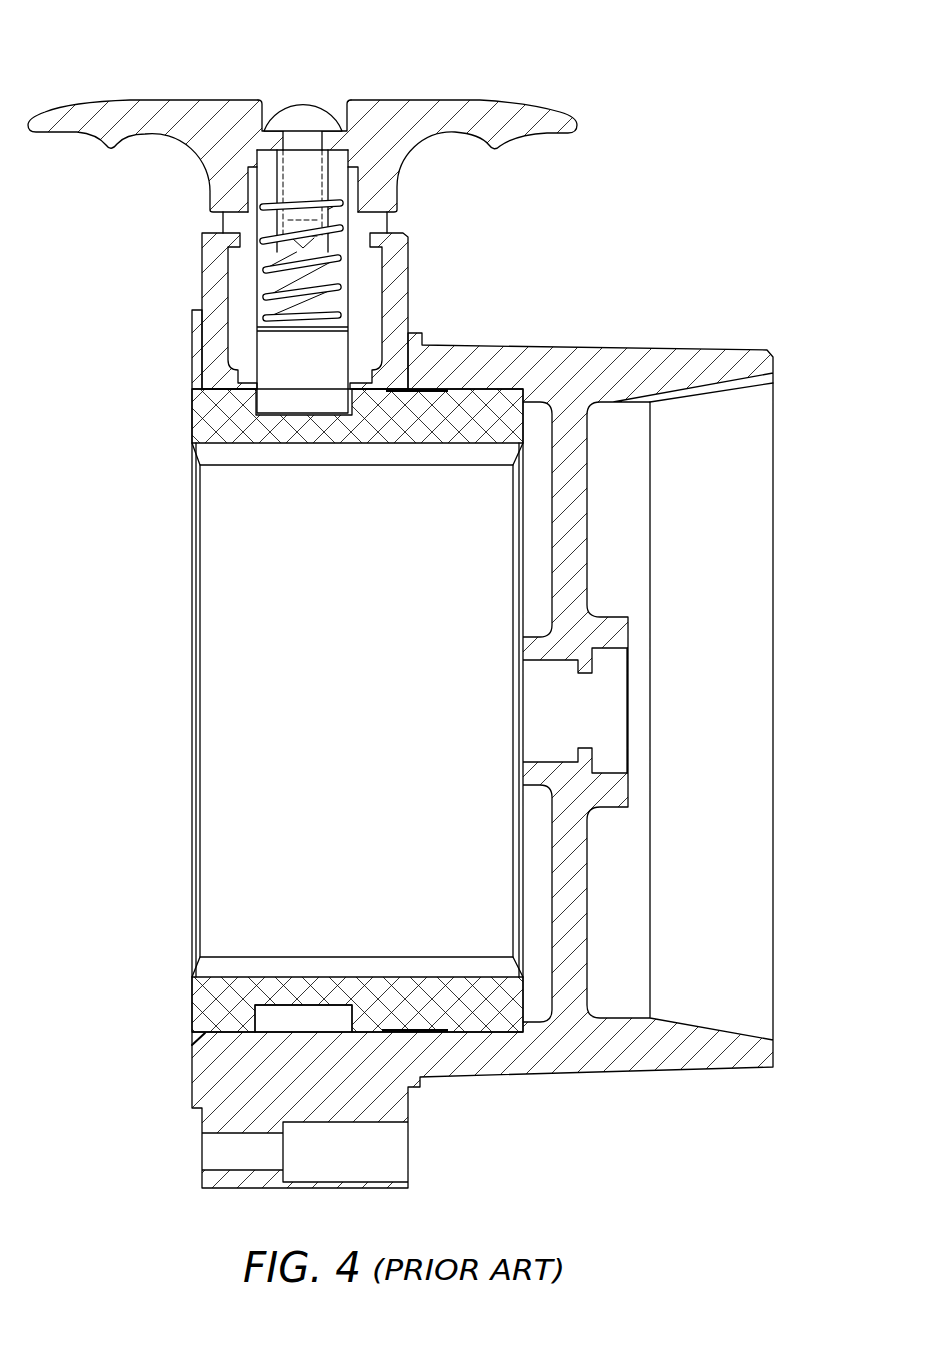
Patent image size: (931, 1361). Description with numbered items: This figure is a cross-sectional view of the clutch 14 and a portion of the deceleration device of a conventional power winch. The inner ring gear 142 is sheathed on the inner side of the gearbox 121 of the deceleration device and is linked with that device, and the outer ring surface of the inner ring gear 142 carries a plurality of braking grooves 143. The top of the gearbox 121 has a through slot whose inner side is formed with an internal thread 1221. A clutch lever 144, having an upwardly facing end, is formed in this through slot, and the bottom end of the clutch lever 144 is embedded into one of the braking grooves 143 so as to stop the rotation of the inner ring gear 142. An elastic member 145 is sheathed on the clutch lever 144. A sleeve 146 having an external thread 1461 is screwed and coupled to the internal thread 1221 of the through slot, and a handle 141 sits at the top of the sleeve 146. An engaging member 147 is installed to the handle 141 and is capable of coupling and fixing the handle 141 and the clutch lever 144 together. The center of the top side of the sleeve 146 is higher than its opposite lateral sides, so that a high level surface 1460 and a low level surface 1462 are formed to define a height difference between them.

The clutch 14 is at (175, 185).
The handle 141 is at (458, 120).
The high level surface 1460 is at (343, 166).
The engaging member 147 is at (302, 123).
The low level surface 1462 is at (360, 206).
The elastic member 145 is at (335, 229).
The clutch lever 144 is at (320, 274).
The sleeve 146 is at (247, 300).
The internal thread 1221 is at (373, 298).
The external thread 1461 is at (389, 300).
The inner ring gear 142 is at (498, 417).
The gearbox 121 is at (580, 380).
The braking groove 143 is at (318, 1012).